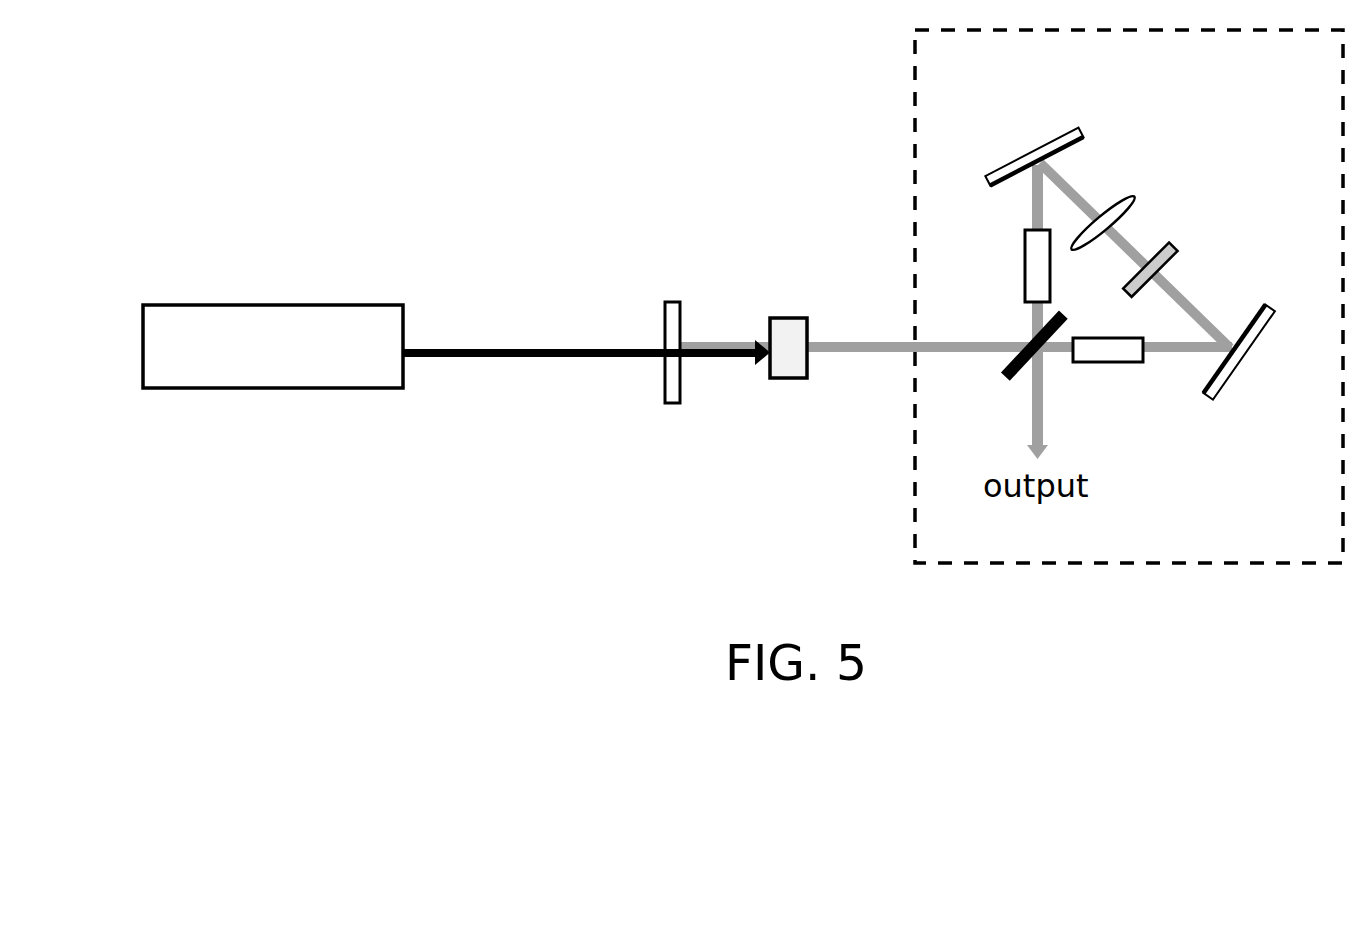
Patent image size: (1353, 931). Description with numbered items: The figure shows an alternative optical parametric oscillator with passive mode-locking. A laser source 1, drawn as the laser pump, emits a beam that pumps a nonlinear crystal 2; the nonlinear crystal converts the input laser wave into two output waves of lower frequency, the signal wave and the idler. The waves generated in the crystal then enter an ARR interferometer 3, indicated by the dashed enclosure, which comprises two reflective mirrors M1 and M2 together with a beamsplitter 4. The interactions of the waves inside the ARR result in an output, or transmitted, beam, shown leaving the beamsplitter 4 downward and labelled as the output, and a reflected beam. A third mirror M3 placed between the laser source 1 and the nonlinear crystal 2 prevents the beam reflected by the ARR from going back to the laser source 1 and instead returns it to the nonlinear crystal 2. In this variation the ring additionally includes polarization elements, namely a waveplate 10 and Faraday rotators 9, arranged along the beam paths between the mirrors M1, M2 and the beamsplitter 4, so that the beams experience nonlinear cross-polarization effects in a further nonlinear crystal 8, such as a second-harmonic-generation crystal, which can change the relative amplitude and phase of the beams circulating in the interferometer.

The laser source 1 is at (282, 305).
The nonlinear crystal 2 is at (780, 318).
The ARR interferometer 3 is at (915, 198).
The beamsplitter 4 is at (1030, 343).
The nonlinear crystal 8 is at (1170, 248).
The Faraday rotator 9 is at (1025, 253).
The waveplate 10 is at (1132, 197).
The reflective mirror M1 is at (1027, 150).
The reflective mirror M2 is at (1238, 370).
The third mirror M3 is at (681, 403).